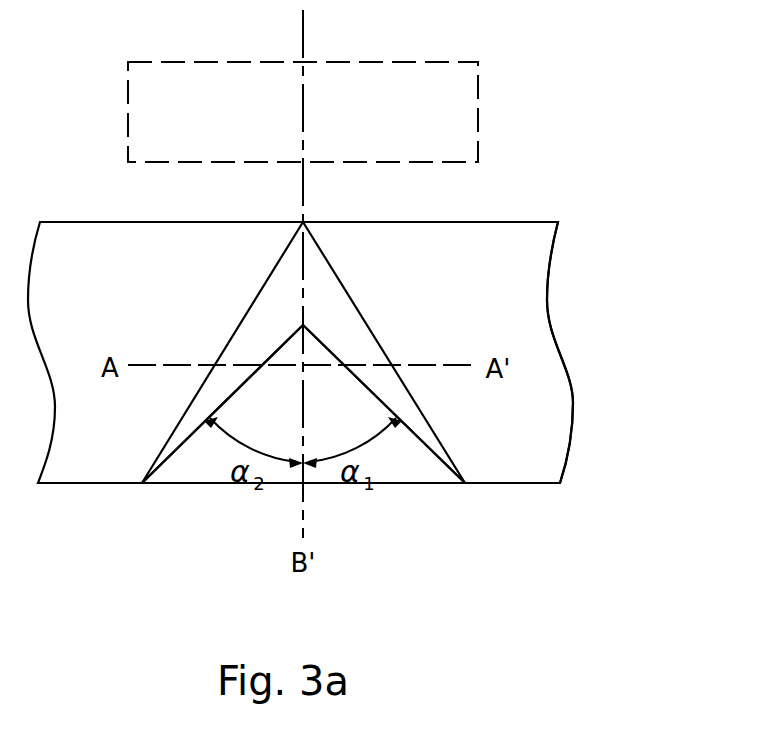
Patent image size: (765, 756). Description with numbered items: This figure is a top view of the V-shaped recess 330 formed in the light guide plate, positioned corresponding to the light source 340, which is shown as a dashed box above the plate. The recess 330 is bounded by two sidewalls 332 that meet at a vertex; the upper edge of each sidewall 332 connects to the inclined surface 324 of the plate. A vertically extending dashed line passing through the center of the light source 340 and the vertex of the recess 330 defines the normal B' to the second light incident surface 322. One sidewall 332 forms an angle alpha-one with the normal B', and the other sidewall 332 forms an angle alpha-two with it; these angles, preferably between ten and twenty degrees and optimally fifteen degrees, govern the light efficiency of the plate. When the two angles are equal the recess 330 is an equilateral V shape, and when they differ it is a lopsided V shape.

The second light incident surface 322 is at (527, 220).
The inclined surface 324 is at (522, 290).
The V-shaped recess 330 is at (265, 412).
The sidewalls 332 is at (179, 437).
The light source 340 is at (155, 72).